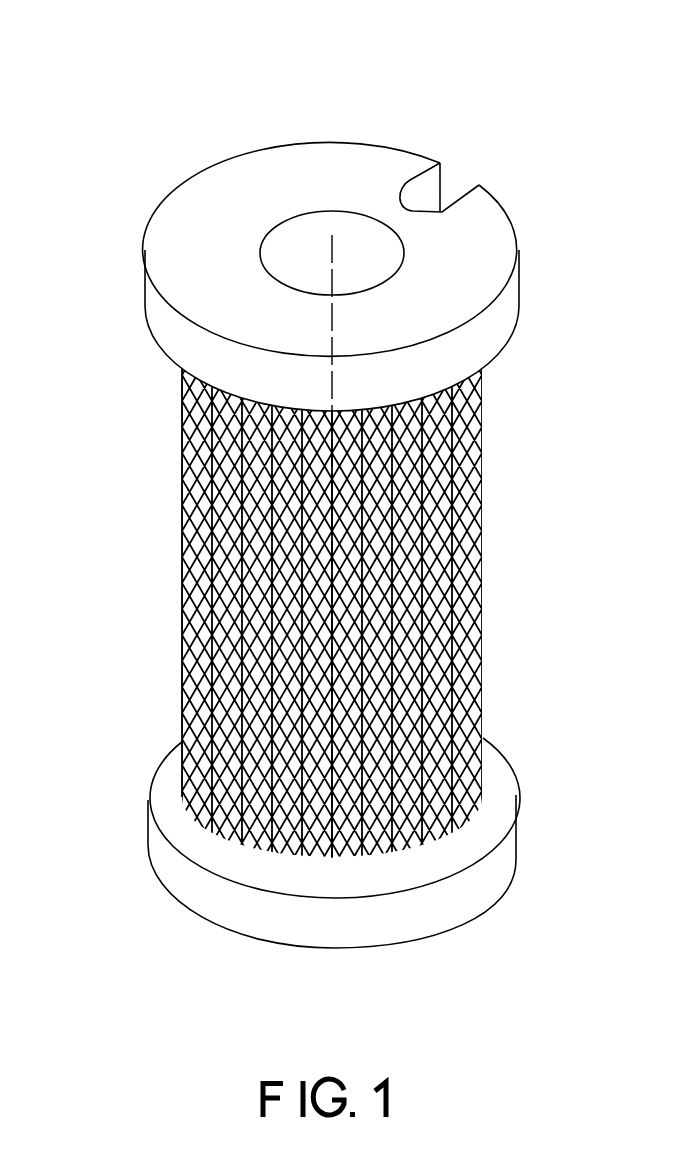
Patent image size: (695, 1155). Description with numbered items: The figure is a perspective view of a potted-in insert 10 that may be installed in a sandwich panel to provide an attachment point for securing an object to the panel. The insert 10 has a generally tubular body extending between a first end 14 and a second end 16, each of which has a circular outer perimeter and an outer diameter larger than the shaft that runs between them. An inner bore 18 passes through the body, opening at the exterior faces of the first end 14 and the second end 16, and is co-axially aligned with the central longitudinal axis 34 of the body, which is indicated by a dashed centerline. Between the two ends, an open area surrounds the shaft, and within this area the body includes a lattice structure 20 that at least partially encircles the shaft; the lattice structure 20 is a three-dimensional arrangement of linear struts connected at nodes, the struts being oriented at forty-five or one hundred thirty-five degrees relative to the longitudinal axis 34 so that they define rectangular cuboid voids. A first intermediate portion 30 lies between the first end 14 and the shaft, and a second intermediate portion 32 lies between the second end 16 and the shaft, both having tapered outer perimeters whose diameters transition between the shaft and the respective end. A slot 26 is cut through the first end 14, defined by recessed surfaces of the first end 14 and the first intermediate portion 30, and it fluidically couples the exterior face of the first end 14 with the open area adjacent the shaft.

The potted-in insert 10 is at (108, 82).
The first end 14 is at (162, 224).
The second end 16 is at (183, 900).
The inner bore 18 is at (298, 212).
The lattice structure 20 is at (482, 567).
The slot 26 is at (417, 178).
The first intermediate portion 30 is at (183, 468).
The second intermediate portion 32 is at (463, 820).
The longitudinal axis 34 is at (335, 262).